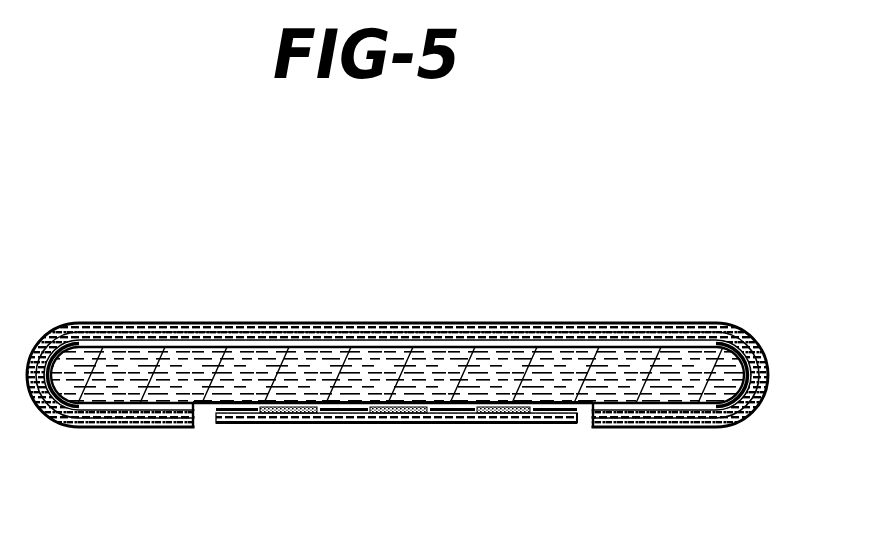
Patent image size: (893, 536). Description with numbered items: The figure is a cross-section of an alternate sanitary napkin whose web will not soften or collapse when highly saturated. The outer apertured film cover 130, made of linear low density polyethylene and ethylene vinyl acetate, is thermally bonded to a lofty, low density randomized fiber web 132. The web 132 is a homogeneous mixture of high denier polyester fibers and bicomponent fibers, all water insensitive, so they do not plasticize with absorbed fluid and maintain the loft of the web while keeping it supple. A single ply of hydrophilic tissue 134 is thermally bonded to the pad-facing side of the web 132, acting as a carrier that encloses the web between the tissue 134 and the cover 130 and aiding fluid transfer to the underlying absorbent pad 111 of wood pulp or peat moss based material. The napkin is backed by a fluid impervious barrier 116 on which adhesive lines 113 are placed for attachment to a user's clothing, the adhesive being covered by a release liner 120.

The apertured film cover 130 is at (652, 327).
The randomized fiber web 132 is at (492, 333).
The tissue 134 is at (240, 350).
The absorbent pad 111 is at (199, 382).
The adhesive lines 113 is at (300, 414).
The release liner 120 is at (548, 427).
The barrier 116 is at (587, 418).